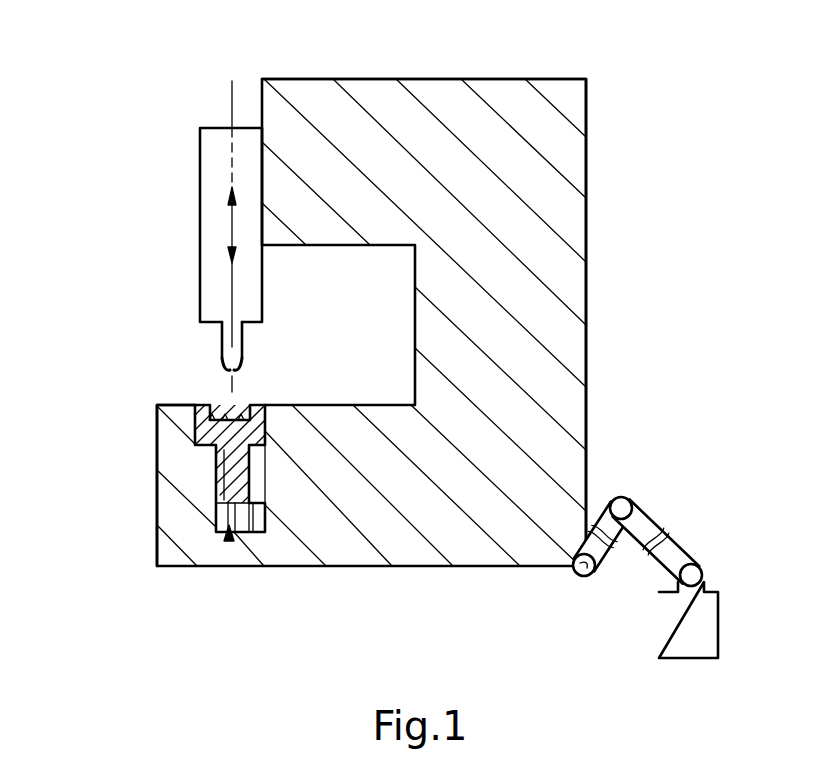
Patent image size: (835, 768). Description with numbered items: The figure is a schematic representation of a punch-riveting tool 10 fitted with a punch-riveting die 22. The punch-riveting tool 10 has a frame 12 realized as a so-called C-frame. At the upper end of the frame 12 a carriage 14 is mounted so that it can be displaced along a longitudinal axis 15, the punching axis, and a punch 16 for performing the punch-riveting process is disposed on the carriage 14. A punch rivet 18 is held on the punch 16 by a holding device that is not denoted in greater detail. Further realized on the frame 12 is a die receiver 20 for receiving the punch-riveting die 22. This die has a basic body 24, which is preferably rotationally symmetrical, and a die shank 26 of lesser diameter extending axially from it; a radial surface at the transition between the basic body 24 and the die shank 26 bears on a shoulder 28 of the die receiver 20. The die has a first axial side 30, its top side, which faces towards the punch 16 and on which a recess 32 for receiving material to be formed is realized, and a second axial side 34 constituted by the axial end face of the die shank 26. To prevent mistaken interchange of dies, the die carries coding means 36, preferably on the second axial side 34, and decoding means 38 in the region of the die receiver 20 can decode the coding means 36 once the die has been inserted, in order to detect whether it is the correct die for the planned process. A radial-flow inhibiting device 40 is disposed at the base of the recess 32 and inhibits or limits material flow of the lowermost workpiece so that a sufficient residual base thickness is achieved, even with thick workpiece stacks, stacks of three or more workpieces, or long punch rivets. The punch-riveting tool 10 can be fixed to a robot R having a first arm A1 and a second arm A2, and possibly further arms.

The punch-riveting tool 10 is at (624, 133).
The frame 12 is at (570, 212).
The carriage 14 is at (210, 191).
The longitudinal axis 15 is at (232, 100).
The punch 16 is at (224, 345).
The punch rivet 18 is at (220, 366).
The die receiver 20 is at (180, 428).
The punch-riveting die 22 is at (203, 446).
The basic body 24 is at (190, 404).
The die shank 26 is at (228, 486).
The shoulder 28 is at (263, 447).
The first axial side 30 is at (252, 400).
The recess 32 is at (233, 403).
The second axial side 34 is at (217, 522).
The coding means 36 is at (229, 542).
The decoding means 38 is at (258, 523).
The radial-flow inhibiting device 40 is at (220, 415).
The first arm A1 is at (655, 537).
The second arm A2 is at (605, 513).
The robot R is at (678, 618).